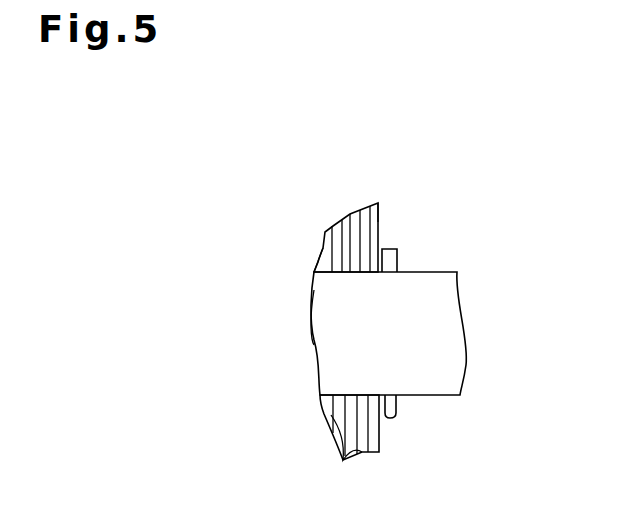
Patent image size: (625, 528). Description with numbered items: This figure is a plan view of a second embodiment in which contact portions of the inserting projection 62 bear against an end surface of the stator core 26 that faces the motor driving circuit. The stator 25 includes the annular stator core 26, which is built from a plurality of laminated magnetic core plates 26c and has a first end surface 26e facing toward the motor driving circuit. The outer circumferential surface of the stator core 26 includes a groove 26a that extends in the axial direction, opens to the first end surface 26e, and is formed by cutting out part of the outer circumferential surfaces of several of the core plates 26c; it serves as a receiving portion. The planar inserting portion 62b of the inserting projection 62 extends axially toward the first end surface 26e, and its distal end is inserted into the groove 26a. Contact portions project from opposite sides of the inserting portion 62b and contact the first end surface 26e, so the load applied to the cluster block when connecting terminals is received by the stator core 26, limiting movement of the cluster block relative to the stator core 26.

The stator 25 is at (331, 224).
The stator core 26 is at (331, 233).
The groove 26a is at (314, 271).
The core plates 26c is at (343, 460).
The first end surface 26e is at (382, 218).
The inserting projection 62 is at (456, 305).
The inserting portion 62b is at (312, 330).